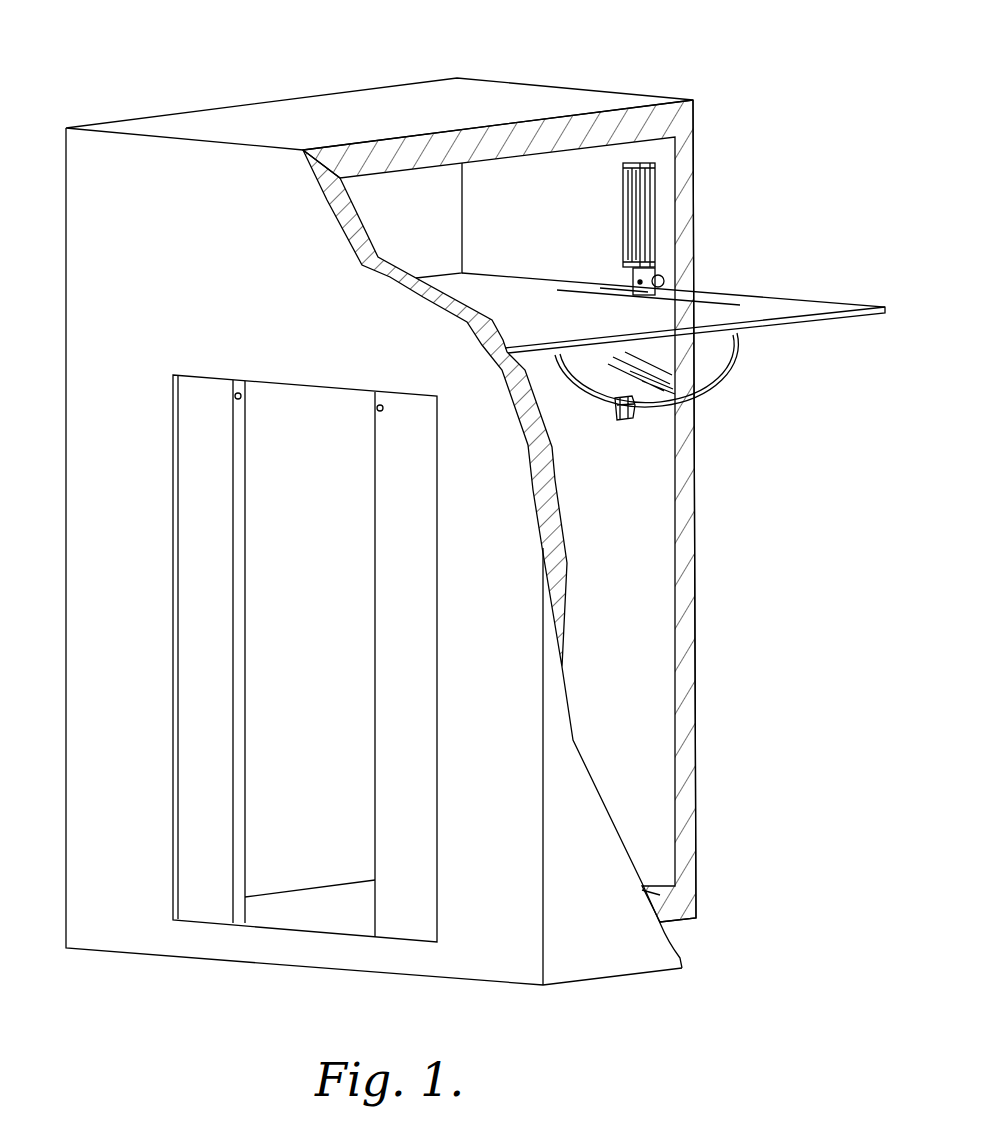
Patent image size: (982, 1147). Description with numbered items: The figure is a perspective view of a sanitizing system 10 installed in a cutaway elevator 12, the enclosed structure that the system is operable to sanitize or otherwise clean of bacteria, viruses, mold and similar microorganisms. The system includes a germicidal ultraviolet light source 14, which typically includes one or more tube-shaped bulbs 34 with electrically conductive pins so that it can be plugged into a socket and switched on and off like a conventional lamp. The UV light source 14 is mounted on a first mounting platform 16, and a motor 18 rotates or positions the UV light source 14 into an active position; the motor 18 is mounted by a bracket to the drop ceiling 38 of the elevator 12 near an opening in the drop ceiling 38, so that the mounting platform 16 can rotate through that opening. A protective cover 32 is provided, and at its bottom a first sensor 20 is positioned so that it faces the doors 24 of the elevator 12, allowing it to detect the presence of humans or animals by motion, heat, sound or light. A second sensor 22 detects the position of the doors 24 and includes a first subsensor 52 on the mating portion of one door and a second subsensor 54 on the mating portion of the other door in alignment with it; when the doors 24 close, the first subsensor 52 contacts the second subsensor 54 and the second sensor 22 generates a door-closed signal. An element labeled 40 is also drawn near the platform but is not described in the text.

The sanitizing system 10 is at (349, 66).
The elevator 12 is at (712, 568).
The germicidal ultraviolet light source 14 is at (632, 224).
The first mounting platform 16 is at (651, 190).
The motor 18 is at (666, 280).
The first sensor 20 is at (617, 421).
The second sensor 22 is at (305, 625).
The elevator doors 24 is at (383, 636).
The protective cover 32 is at (718, 360).
The tube-shaped bulbs 34 is at (638, 247).
The drop ceiling 38 is at (802, 306).
The slot 40 is at (573, 292).
The first subsensor 52 is at (241, 399).
The second subsensor 54 is at (382, 411).